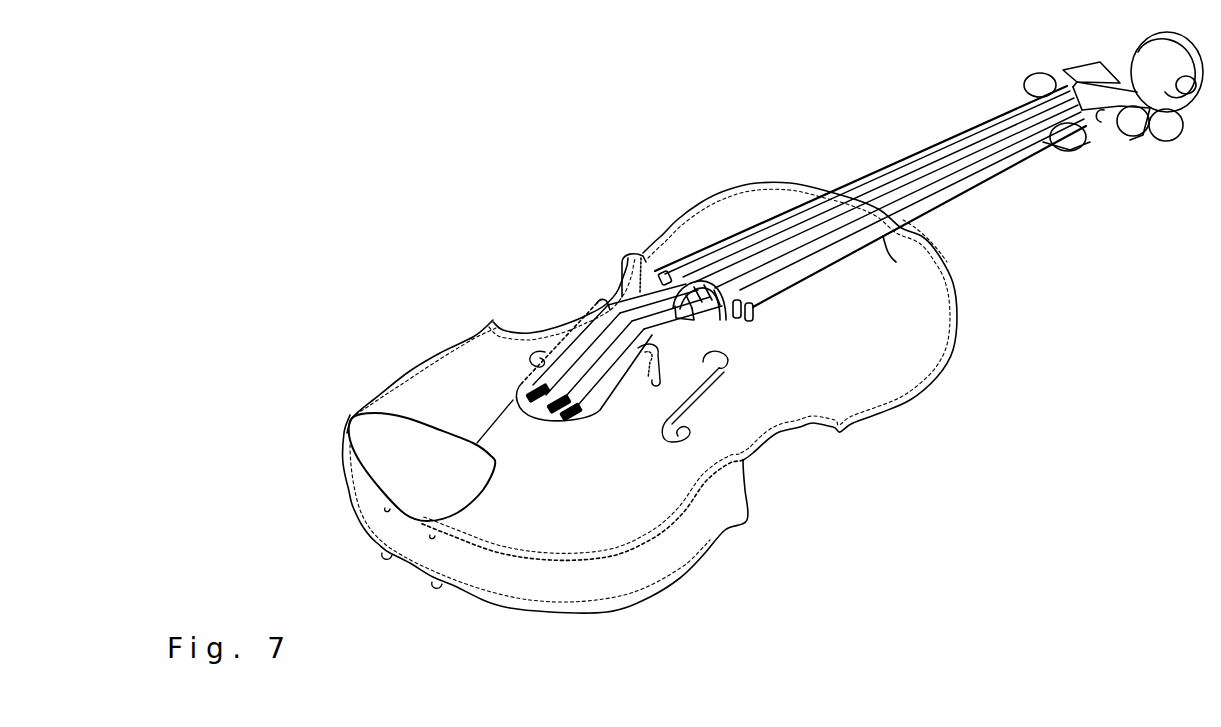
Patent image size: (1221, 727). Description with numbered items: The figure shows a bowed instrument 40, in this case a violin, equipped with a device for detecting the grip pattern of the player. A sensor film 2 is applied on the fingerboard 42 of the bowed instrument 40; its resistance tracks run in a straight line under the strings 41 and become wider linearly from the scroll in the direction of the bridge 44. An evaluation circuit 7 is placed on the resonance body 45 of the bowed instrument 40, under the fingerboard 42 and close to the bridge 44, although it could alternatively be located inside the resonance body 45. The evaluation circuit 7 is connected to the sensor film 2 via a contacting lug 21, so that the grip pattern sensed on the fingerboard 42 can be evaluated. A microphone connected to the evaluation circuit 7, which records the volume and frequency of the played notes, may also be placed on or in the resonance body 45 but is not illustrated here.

The sensor film 2 is at (802, 258).
The evaluation circuit 7 is at (667, 277).
The contacting lug 21 is at (680, 297).
The bowed instrument 40 is at (460, 210).
The strings 41 is at (992, 145).
The fingerboard 42 is at (942, 193).
The bridge 44 is at (600, 313).
The resonance body 45 is at (643, 497).